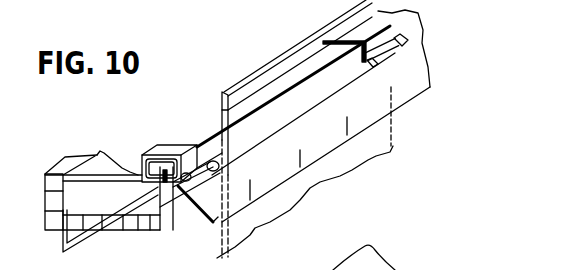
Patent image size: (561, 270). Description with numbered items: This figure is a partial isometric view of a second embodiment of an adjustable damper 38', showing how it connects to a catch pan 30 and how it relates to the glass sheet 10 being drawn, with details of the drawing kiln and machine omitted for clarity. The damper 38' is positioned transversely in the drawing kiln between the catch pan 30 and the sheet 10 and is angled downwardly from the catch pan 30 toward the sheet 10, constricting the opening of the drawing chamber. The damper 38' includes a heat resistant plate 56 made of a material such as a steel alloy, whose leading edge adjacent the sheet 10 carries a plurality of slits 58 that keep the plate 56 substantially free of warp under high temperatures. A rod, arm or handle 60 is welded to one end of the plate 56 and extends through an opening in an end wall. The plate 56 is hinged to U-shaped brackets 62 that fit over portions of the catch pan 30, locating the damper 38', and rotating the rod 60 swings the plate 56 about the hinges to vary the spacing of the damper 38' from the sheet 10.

The glass sheet 10 is at (221, 106).
The slits 58 is at (298, 166).
The adjustable damper 38' is at (411, 51).
The catch pan 30 is at (137, 230).
The U-shaped brackets 62 is at (161, 148).
The rod, arm or handle 60 is at (83, 240).
The heat resistant plate 56 is at (203, 228).